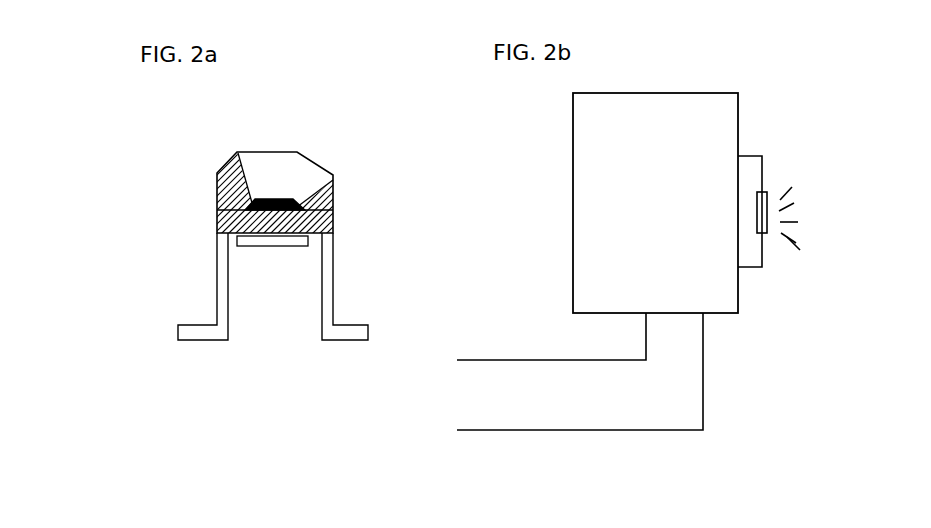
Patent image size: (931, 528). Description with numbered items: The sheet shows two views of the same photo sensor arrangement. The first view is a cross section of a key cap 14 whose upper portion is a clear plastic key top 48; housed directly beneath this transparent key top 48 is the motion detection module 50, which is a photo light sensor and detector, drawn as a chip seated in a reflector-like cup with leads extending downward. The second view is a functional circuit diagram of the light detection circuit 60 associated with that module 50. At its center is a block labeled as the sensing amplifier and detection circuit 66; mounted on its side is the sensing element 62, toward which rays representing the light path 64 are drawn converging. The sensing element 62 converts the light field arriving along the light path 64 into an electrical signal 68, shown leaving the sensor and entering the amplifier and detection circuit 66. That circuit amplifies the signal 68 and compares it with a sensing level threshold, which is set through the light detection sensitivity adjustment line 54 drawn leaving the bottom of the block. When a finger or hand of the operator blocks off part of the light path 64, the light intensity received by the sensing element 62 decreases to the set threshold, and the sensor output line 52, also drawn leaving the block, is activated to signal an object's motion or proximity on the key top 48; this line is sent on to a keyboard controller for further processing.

In FIG. 2a, the key cap 14 is at (136, 176).
In FIG. 2a, the clear plastic key top 48 is at (232, 162).
In FIG. 2a, the motion detection module 50 is at (278, 197).
In FIG. 2b, the light detection circuit 60 is at (515, 159).
In FIG. 2b, the amplifier and detection circuit 66 is at (573, 278).
In FIG. 2b, the sensing element 62 is at (765, 190).
In FIG. 2b, the light path 64 is at (787, 250).
In FIG. 2b, the electrical signal 68 is at (750, 268).
In FIG. 2b, the sensor output line 52 is at (503, 362).
In FIG. 2b, the light detection sensitivity adjustment line 54 is at (587, 432).